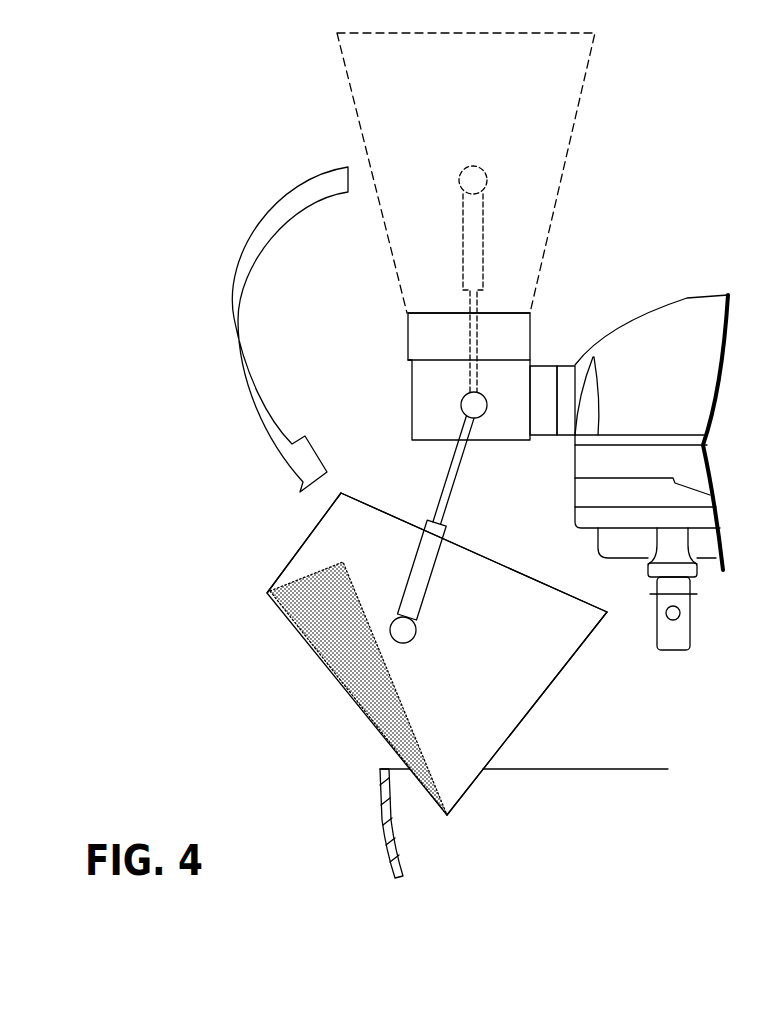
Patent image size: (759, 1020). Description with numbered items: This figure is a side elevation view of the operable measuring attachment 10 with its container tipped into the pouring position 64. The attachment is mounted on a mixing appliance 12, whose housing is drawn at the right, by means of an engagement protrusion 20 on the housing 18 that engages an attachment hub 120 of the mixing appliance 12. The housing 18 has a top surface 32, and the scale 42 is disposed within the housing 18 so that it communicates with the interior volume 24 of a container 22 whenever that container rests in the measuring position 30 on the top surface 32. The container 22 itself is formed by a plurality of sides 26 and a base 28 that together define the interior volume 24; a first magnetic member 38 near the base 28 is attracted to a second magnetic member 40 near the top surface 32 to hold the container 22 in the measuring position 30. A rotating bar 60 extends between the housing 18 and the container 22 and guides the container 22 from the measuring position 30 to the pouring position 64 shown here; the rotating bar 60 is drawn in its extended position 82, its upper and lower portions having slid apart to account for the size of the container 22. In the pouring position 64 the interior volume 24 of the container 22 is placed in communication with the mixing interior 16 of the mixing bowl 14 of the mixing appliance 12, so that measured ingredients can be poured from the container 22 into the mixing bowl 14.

The operable measuring attachment 10 is at (207, 218).
The mixing appliance 12 is at (688, 290).
The mixing bowl 14 is at (377, 813).
The mixing interior 16 is at (525, 854).
The housing 18 is at (412, 356).
The engagement protrusion 20 is at (538, 378).
The attachment hub 120 is at (568, 382).
The container 22 is at (305, 647).
The interior volume 24 is at (553, 683).
The sides 26 is at (313, 557).
The base 28 is at (308, 538).
The measuring position 30 is at (577, 127).
The top surface 32 is at (498, 313).
The first magnetic member 38 is at (323, 512).
The second magnetic member 40 is at (427, 313).
The scale 42 is at (428, 340).
The rotating bar 60 is at (448, 500).
The pouring position 64 is at (347, 717).
The extended position 82 is at (433, 476).